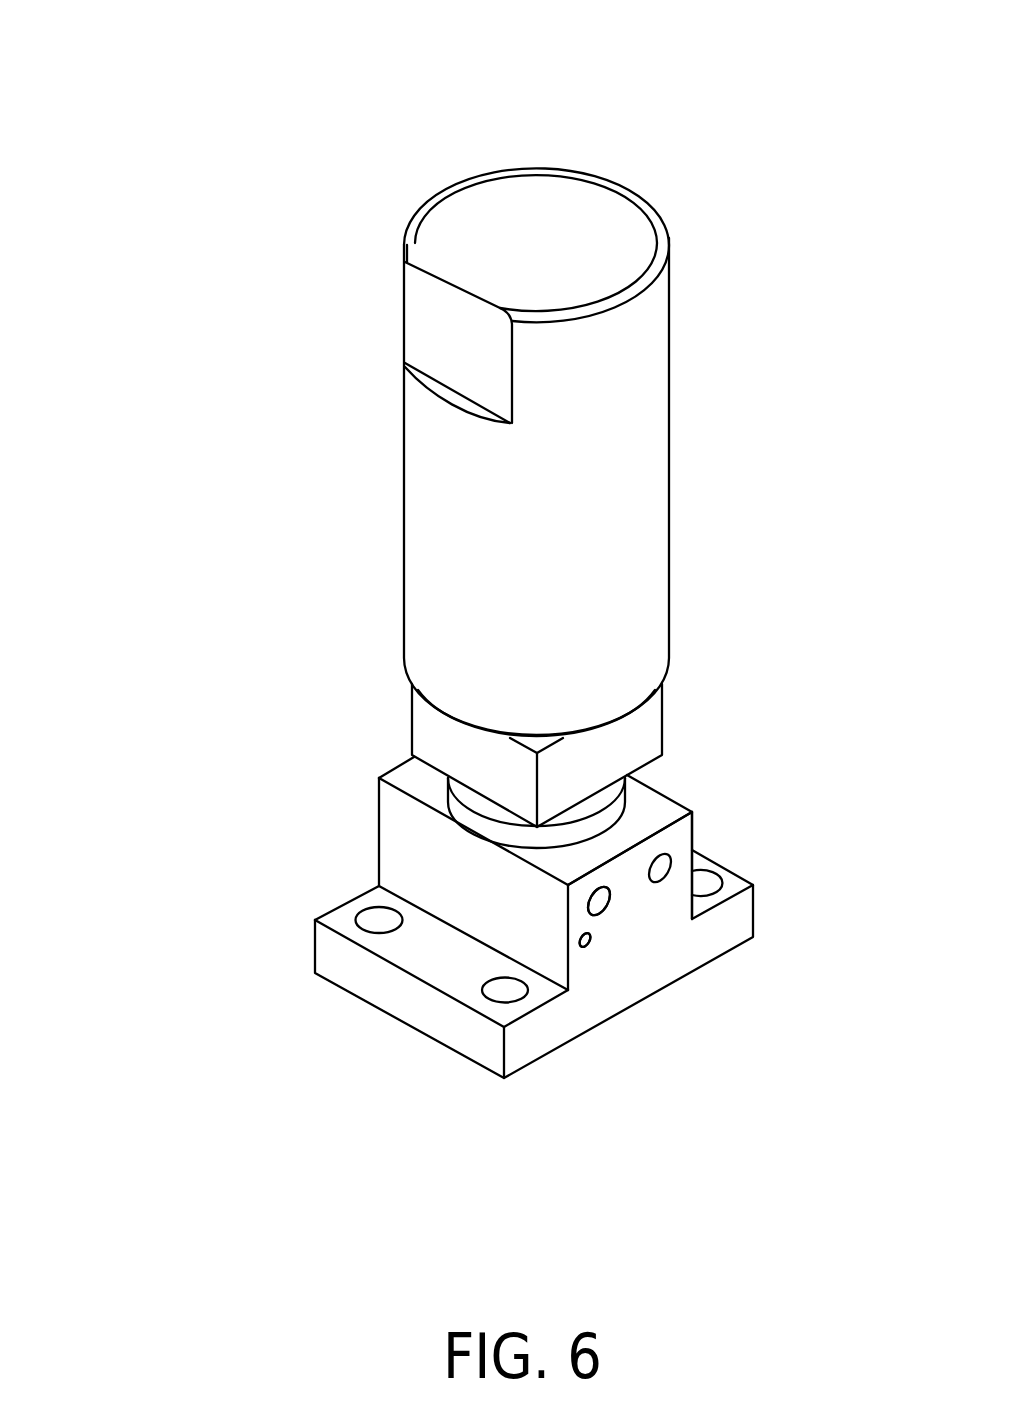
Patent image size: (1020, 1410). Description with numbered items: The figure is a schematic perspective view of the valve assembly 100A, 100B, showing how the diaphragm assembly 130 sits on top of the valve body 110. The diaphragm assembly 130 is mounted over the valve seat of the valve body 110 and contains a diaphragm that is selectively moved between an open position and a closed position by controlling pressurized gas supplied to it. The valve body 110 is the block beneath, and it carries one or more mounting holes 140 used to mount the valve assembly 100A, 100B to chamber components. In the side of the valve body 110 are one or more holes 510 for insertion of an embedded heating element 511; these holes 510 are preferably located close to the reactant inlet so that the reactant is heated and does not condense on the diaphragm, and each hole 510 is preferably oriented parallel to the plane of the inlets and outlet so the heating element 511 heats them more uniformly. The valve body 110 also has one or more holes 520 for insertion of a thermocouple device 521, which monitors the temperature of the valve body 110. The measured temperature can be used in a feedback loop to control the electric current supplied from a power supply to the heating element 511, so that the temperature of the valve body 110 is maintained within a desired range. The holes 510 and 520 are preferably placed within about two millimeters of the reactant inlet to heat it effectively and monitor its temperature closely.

The valve assembly 100A is at (483, 599).
The valve assembly 100B is at (483, 599).
The valve body 110 is at (238, 941).
The diaphragm assembly 130 is at (669, 461).
The mounting holes 140 is at (381, 910).
The holes 510 is at (664, 855).
The embedded heating element 511 is at (692, 815).
The holes 520 is at (588, 942).
The thermocouple device 521 is at (583, 946).